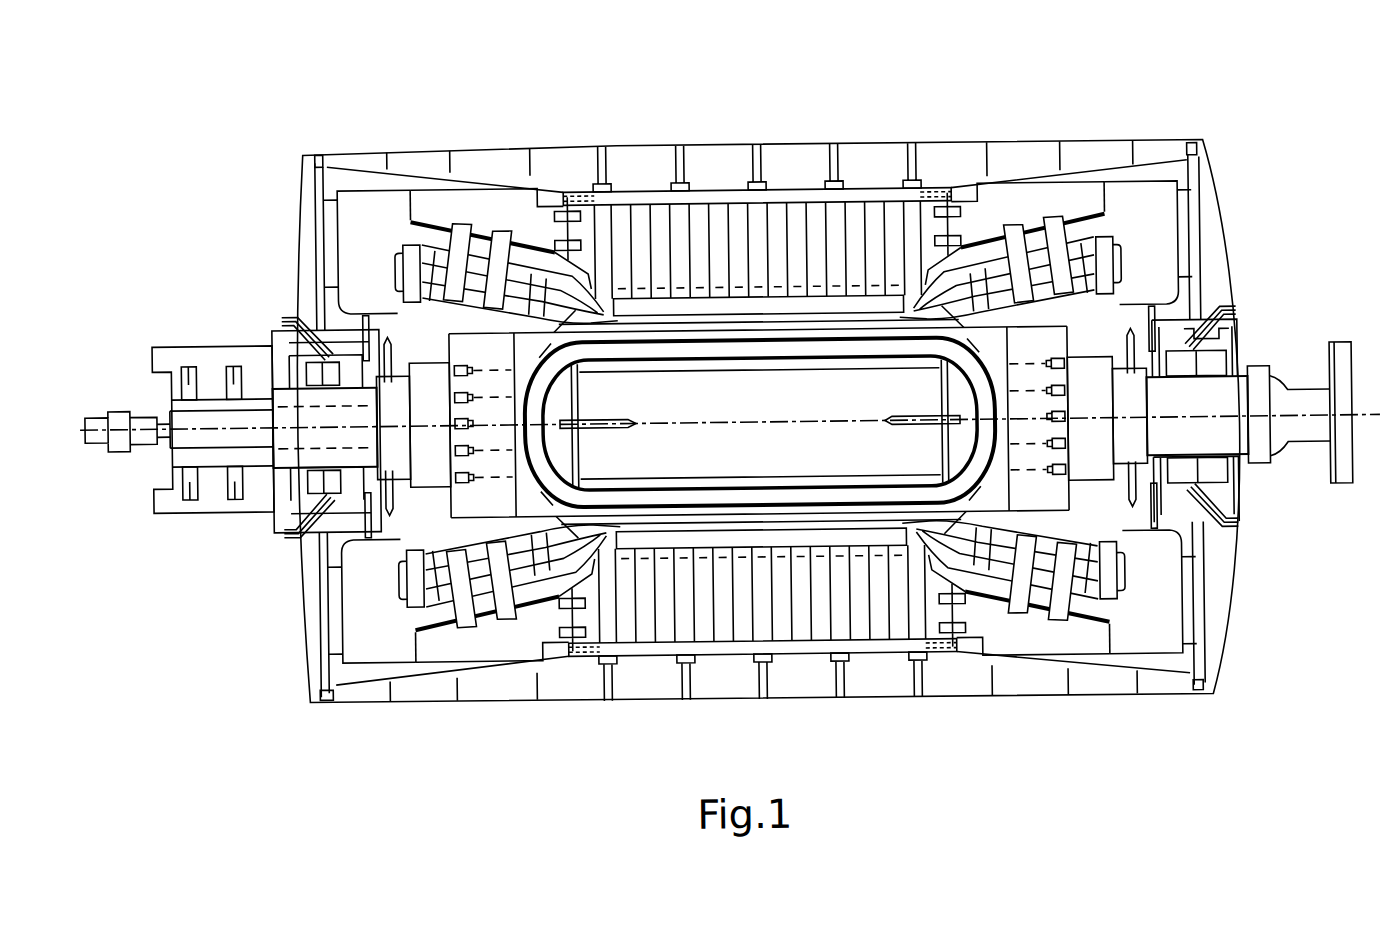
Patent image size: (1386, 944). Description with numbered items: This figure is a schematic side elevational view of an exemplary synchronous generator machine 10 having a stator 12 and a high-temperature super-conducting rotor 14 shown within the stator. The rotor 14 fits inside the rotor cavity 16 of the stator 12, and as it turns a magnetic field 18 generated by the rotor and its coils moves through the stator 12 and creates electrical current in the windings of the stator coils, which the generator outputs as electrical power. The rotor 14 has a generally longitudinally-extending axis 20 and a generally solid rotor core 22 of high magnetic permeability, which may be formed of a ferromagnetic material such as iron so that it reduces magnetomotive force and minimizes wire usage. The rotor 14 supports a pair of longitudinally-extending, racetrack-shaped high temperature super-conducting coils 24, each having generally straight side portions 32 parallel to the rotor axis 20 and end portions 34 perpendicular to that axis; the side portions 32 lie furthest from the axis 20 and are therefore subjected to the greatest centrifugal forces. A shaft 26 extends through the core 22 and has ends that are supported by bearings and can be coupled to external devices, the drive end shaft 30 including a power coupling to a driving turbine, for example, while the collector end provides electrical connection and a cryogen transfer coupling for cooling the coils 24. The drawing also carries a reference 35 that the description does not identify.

The synchronous generator machine 10 is at (454, 120).
The stator 12 is at (660, 227).
The rotor 14 is at (471, 506).
The rotor cavity 16 is at (429, 314).
The magnetic field 18 is at (862, 276).
The longitudinally-extending axis 20 is at (222, 424).
The rotor core 22 is at (718, 448).
The racetrack-shaped HTS coils 24 is at (990, 336).
The shaft 26 is at (347, 405).
The drive end shaft 30 is at (1222, 401).
The side portions 32 is at (734, 348).
The end portions 34 is at (551, 477).
The collector housing 35 is at (214, 343).